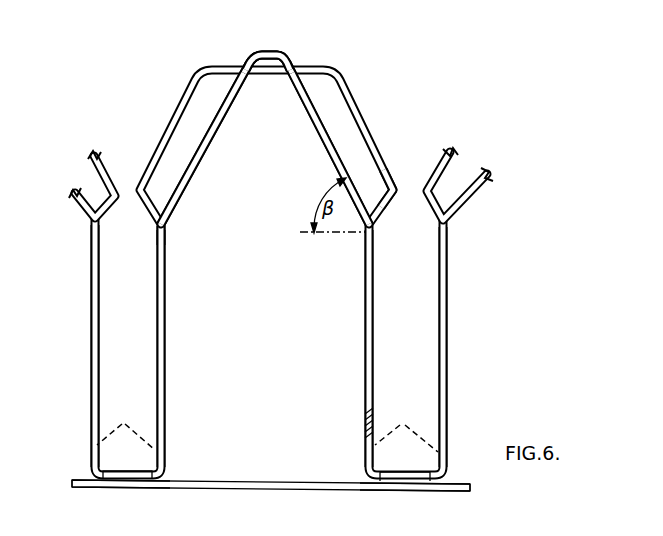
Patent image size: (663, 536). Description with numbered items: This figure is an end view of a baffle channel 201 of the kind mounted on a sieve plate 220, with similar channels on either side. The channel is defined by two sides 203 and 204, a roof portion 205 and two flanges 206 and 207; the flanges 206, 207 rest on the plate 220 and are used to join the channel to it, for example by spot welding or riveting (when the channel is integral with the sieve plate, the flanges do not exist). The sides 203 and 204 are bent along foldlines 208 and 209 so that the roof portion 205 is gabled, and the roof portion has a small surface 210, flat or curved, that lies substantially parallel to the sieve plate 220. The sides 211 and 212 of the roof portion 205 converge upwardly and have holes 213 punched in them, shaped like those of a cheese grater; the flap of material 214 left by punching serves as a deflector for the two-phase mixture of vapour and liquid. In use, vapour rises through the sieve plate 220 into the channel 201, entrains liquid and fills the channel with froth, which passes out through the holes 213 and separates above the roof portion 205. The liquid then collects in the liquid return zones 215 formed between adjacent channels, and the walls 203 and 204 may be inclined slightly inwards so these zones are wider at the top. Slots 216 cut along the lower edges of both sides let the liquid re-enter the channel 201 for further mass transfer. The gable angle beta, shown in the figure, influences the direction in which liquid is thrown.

The channel 201 is at (343, 387).
The side 203 is at (157, 297).
The side 204 is at (375, 297).
The roof portion 205 is at (265, 52).
The flange 206 is at (132, 478).
The flange 207 is at (108, 481).
The foldline 208 is at (157, 229).
The foldline 209 is at (374, 228).
The small surface 210 is at (280, 52).
The side of the roof portion 211 is at (203, 142).
The side of the roof portion 212 is at (335, 143).
The holes 213 is at (328, 110).
The flap of material 214 is at (185, 97).
The liquid return zone 215 is at (100, 355).
The slots 216 is at (267, 427).
The plate 220 is at (206, 485).